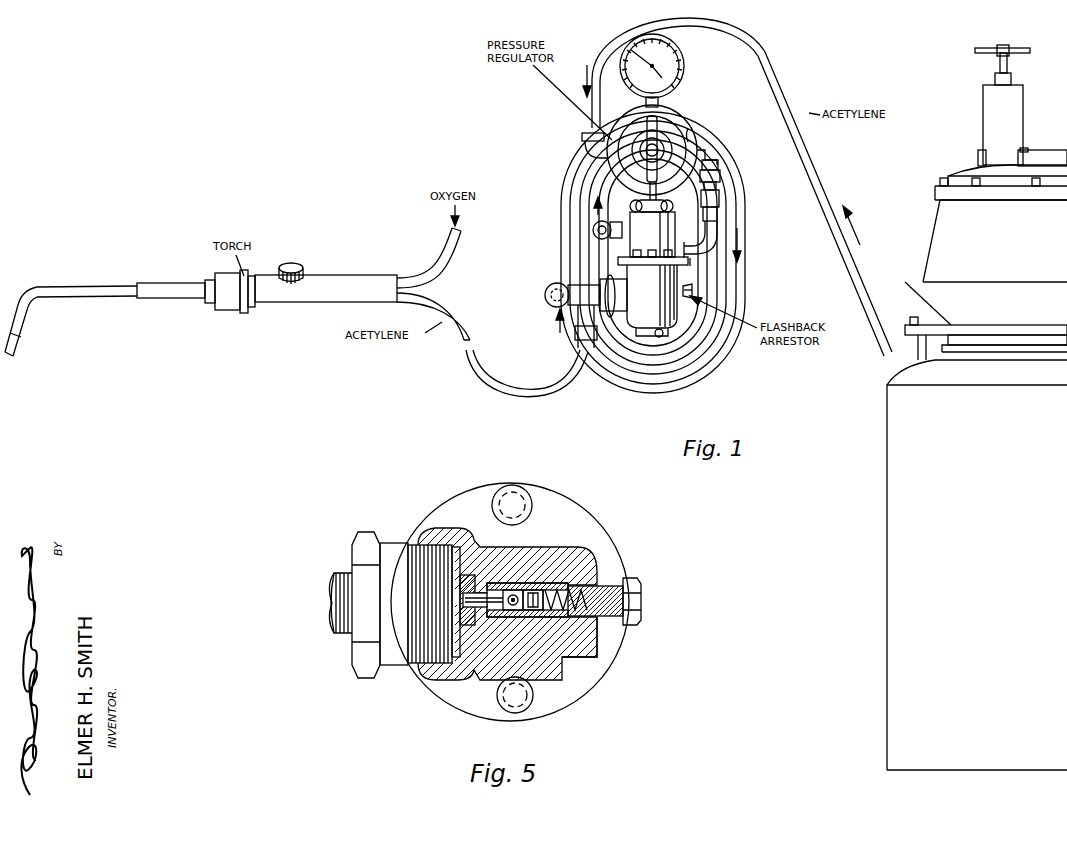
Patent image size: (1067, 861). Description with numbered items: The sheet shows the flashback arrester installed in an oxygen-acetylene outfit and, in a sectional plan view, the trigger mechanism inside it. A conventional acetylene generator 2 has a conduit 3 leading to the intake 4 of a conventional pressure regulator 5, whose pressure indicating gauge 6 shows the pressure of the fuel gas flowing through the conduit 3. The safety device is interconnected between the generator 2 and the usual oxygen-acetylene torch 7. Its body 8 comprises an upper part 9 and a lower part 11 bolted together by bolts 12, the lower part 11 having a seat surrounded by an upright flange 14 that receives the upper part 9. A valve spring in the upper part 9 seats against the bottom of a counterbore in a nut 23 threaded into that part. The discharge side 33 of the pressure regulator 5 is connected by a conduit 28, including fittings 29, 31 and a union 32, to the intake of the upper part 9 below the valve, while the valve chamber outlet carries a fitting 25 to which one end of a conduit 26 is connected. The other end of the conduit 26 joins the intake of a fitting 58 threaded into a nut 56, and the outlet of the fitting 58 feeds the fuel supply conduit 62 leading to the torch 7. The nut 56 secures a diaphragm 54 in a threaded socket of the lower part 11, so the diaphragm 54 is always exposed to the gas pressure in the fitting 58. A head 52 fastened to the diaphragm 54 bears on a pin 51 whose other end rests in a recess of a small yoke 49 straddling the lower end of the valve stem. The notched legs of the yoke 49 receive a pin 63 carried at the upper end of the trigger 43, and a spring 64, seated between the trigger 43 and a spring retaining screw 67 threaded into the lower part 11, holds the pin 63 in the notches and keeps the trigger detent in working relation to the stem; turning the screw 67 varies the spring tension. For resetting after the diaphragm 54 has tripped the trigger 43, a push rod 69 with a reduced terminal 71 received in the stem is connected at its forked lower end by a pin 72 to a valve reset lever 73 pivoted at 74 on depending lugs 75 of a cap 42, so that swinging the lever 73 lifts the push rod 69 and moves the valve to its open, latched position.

In FIG. 1, the acetylene generator 2 is at (898, 556).
In FIG. 1, the conduit 3 is at (862, 247).
In FIG. 1, the intake 4 is at (609, 133).
In FIG. 1, the pressure regulator 5 is at (612, 164).
In FIG. 1, the pressure indicating gauge 6 is at (632, 48).
In FIG. 1, the oxygen-acetylene torch 7 is at (311, 312).
In FIG. 1, the body 8 is at (694, 303).
In FIG. 5, the body 8 is at (632, 641).
In FIG. 1, the upper part 9 is at (714, 222).
In FIG. 1, the lower part 11 is at (690, 316).
In FIG. 5, the lower part 11 is at (566, 663).
In FIG. 1, the bolts 12 is at (640, 244).
In FIG. 1, the upright flange 14 is at (640, 259).
In FIG. 5, the upright flange 14 is at (628, 554).
In FIG. 1, the nut 23 is at (672, 206).
In FIG. 1, the fitting 25 is at (593, 228).
In FIG. 1, the conduit 26 is at (600, 191).
In FIG. 1, the conduit 28 is at (708, 262).
In FIG. 1, the fitting 29 is at (718, 241).
In FIG. 1, the fitting 31 is at (716, 153).
In FIG. 1, the union 32 is at (720, 198).
In FIG. 1, the discharge side 33 is at (690, 126).
In FIG. 1, the cap 42 is at (685, 320).
In FIG. 5, the trigger 43 is at (556, 600).
In FIG. 5, the yoke 49 is at (511, 597).
In FIG. 5, the pin 51 is at (472, 625).
In FIG. 5, the head 52 is at (460, 556).
In FIG. 5, the diaphragm 54 is at (440, 545).
In FIG. 1, the nut 56 is at (610, 320).
In FIG. 5, the nut 56 is at (362, 538).
In FIG. 1, the fitting 58 is at (547, 293).
In FIG. 5, the fitting 58 is at (337, 578).
In FIG. 1, the fuel supply conduit 62 is at (529, 398).
In FIG. 5, the pin 63 is at (597, 648).
In FIG. 5, the spring 64 is at (588, 605).
In FIG. 1, the spring retaining screw 67 is at (696, 292).
In FIG. 5, the spring retaining screw 67 is at (642, 603).
In FIG. 5, the push rod 69 is at (518, 592).
In FIG. 5, the reduced terminal 71 is at (515, 606).
In FIG. 1, the pin 72 is at (660, 338).
In FIG. 1, the valve reset lever 73 is at (658, 338).
In FIG. 1, the pivot 74 is at (668, 338).
In FIG. 1, the depending lugs 75 is at (678, 324).